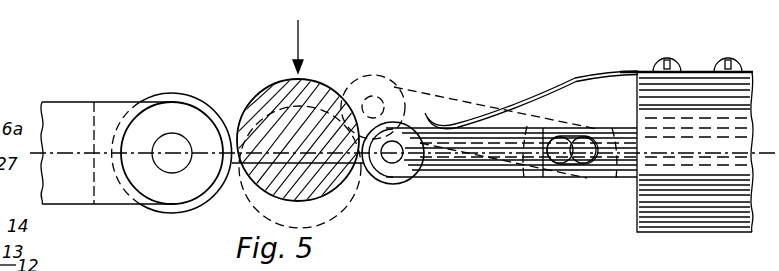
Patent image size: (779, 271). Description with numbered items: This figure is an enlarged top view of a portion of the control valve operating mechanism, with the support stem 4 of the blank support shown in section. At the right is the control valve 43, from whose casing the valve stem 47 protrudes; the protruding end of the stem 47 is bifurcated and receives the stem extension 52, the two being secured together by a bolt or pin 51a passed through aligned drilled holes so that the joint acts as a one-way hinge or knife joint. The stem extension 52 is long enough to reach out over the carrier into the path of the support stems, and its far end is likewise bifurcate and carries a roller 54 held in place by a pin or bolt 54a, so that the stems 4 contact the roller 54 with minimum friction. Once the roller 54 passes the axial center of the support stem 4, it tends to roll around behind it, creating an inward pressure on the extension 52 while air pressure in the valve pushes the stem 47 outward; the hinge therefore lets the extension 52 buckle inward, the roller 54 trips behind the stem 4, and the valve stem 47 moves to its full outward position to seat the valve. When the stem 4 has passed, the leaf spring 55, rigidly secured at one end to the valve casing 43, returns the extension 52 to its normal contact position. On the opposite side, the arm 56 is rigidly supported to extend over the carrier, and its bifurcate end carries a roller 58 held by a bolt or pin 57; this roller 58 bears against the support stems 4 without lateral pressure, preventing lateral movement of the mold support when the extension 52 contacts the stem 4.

The support stem 4 is at (270, 97).
The control valve 43 is at (725, 217).
The valve stem 47 is at (678, 158).
The bolt or pin 51a is at (582, 156).
The stem extension 52 is at (480, 178).
The roller 54 is at (400, 179).
The pin or bolt 54a is at (392, 161).
The leaf spring 55 is at (575, 76).
The arm 56 is at (79, 196).
The bolt or pin 57 is at (165, 160).
The roller 58 is at (200, 204).